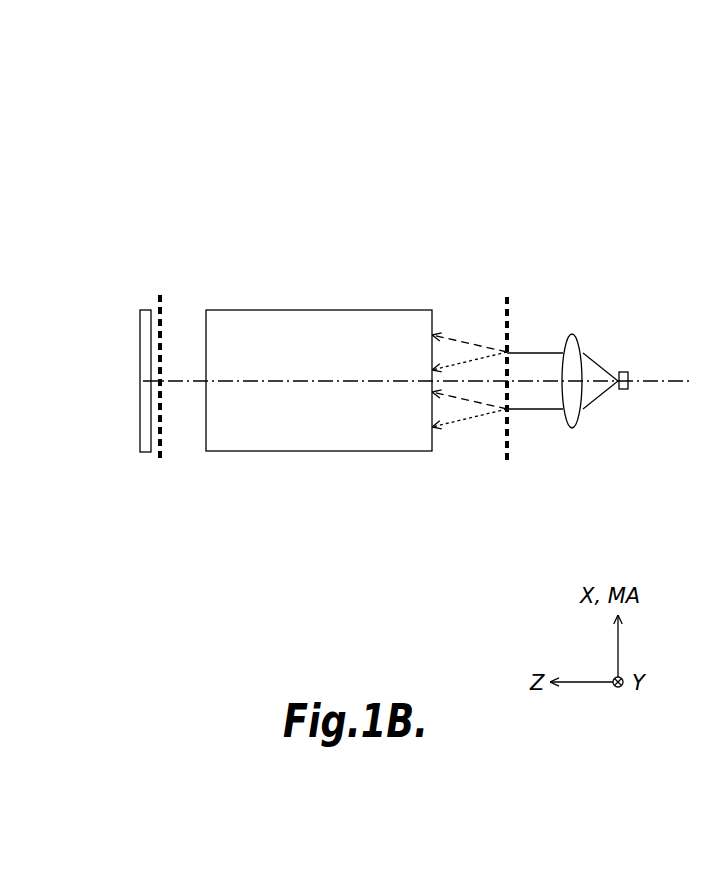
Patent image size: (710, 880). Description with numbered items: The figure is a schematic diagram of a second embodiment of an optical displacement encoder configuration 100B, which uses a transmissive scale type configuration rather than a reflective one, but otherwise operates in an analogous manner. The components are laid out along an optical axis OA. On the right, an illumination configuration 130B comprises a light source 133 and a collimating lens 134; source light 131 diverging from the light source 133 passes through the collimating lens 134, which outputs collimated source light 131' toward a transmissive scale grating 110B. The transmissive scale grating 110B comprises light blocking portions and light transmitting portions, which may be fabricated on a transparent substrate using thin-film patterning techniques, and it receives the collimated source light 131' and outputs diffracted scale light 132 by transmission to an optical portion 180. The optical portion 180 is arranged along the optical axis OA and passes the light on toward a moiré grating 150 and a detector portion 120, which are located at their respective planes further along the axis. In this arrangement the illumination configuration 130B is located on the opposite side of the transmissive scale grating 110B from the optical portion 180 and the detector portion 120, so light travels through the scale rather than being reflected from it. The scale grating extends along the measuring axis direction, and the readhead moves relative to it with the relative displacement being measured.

The optical displacement encoder configuration 100B is at (462, 232).
The optical axis OA is at (174, 381).
The detector portion 120 is at (143, 453).
The moiré grating 150 is at (160, 462).
The optical portion 180 is at (320, 452).
The diffracted scale light 132 is at (457, 433).
The transmissive scale grating 110B is at (505, 467).
The collimated source light 131' is at (546, 408).
The illumination configuration 130B is at (602, 353).
The collimating lens 134 is at (573, 334).
The source light 131 is at (611, 402).
The light source 133 is at (623, 372).